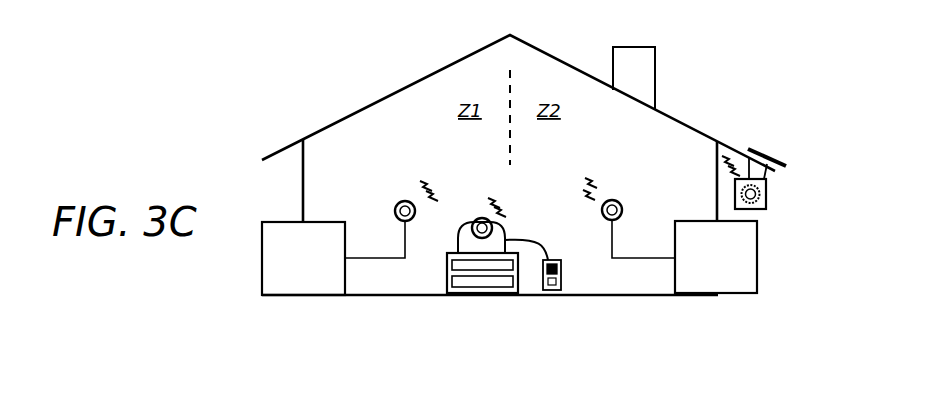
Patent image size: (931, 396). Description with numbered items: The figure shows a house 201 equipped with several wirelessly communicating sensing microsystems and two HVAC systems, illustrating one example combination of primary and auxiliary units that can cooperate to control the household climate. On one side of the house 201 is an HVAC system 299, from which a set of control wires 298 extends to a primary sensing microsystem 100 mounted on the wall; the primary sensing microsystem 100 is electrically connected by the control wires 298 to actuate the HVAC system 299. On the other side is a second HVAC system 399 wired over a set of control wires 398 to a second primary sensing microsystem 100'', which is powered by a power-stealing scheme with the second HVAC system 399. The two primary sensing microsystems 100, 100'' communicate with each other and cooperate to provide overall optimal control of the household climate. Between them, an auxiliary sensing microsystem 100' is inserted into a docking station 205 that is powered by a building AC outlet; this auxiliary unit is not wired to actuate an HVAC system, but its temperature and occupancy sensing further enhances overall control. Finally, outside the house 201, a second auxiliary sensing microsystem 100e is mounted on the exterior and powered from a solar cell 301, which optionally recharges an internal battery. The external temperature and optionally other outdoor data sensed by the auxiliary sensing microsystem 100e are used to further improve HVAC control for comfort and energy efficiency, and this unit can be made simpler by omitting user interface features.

The house 201 is at (398, 92).
The solar cell 301 is at (760, 145).
The primary sensing microsystem 100 is at (380, 201).
The auxiliary sensing microsystem 100' is at (482, 199).
The second primary sensing microsystem 100'' is at (640, 199).
The second auxiliary sensing microsystem 100e is at (767, 193).
The HVAC system 299 is at (303, 258).
The second HVAC system 399 is at (716, 257).
The control wires 298 is at (409, 249).
The control wires 398 is at (606, 251).
The docking station 205 is at (458, 232).